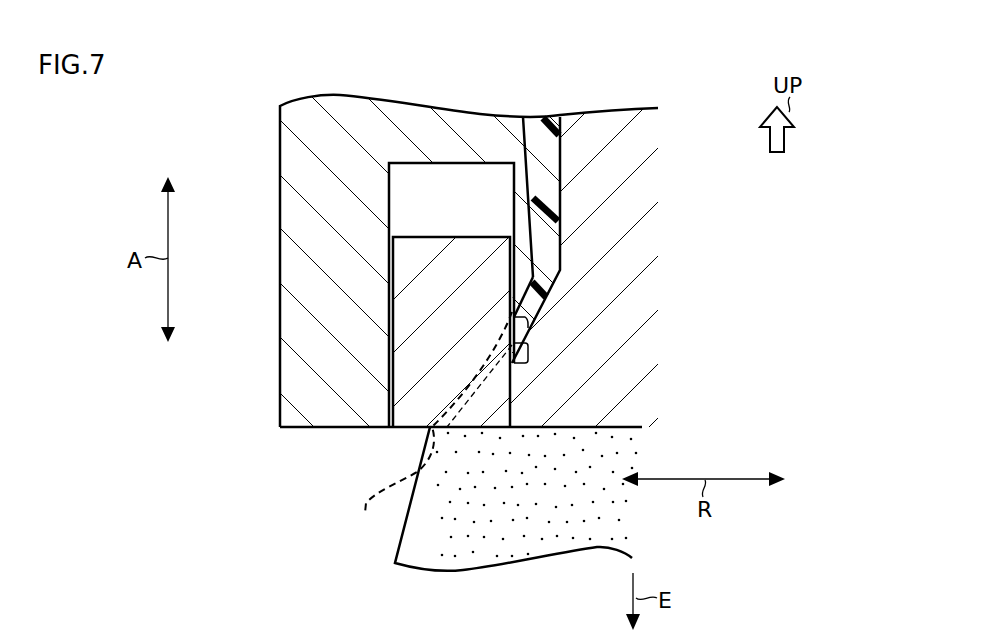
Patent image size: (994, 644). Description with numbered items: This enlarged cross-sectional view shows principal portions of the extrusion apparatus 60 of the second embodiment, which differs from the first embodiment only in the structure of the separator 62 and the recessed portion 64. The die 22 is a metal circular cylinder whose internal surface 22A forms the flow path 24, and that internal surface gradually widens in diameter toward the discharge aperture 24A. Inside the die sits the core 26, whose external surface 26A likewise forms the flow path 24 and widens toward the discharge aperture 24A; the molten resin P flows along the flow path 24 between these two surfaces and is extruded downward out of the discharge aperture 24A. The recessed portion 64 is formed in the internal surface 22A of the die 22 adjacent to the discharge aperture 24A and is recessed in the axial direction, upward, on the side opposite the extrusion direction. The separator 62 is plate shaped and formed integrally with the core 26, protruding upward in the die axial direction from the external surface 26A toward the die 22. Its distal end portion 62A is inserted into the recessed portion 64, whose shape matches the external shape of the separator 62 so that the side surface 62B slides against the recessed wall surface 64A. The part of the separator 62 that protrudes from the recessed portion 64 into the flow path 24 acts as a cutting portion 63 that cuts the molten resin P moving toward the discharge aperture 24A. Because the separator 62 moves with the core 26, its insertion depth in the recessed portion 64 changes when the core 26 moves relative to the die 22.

The die 22 is at (280, 394).
The internal surface 22A is at (530, 152).
The flow path 24 is at (550, 198).
The discharge aperture 24A is at (428, 425).
The core 26 is at (515, 429).
The external surface 26A is at (563, 138).
The extrusion apparatus 60 is at (211, 118).
The separator 62 is at (481, 237).
The distal end portion 62A is at (418, 166).
The side surface 62B is at (389, 309).
The cutting portion 63 is at (530, 338).
The recessed portion 64 is at (389, 191).
The recessed wall surface 64A is at (389, 216).
The molten resin P is at (393, 554).